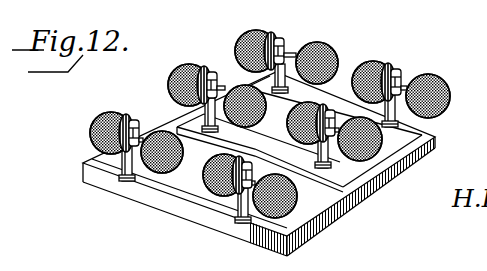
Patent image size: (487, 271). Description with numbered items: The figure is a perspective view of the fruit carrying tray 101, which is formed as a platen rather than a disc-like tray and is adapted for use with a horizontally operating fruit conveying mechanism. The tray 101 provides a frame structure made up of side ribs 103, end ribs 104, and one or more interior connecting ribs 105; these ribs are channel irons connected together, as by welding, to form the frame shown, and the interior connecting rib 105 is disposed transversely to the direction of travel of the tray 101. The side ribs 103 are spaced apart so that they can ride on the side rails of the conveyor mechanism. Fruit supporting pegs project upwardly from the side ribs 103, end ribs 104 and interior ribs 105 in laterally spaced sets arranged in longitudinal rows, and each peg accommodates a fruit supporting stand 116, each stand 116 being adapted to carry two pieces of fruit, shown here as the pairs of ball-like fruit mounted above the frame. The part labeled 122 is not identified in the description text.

The tray 101 is at (443, 148).
The side ribs 103 is at (190, 110).
The end ribs 104 is at (327, 102).
The interior connecting ribs 105 is at (244, 142).
The fruit supporting stand 116 is at (214, 238).
The ball clamp 122 is at (218, 69).